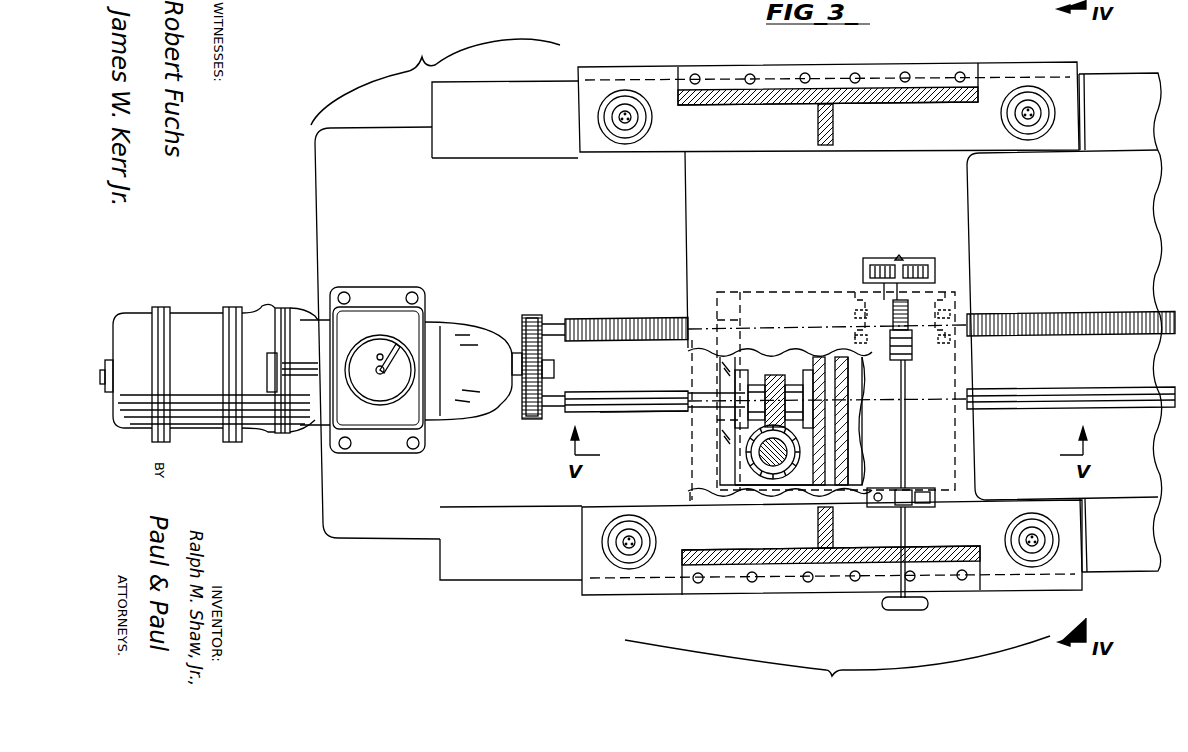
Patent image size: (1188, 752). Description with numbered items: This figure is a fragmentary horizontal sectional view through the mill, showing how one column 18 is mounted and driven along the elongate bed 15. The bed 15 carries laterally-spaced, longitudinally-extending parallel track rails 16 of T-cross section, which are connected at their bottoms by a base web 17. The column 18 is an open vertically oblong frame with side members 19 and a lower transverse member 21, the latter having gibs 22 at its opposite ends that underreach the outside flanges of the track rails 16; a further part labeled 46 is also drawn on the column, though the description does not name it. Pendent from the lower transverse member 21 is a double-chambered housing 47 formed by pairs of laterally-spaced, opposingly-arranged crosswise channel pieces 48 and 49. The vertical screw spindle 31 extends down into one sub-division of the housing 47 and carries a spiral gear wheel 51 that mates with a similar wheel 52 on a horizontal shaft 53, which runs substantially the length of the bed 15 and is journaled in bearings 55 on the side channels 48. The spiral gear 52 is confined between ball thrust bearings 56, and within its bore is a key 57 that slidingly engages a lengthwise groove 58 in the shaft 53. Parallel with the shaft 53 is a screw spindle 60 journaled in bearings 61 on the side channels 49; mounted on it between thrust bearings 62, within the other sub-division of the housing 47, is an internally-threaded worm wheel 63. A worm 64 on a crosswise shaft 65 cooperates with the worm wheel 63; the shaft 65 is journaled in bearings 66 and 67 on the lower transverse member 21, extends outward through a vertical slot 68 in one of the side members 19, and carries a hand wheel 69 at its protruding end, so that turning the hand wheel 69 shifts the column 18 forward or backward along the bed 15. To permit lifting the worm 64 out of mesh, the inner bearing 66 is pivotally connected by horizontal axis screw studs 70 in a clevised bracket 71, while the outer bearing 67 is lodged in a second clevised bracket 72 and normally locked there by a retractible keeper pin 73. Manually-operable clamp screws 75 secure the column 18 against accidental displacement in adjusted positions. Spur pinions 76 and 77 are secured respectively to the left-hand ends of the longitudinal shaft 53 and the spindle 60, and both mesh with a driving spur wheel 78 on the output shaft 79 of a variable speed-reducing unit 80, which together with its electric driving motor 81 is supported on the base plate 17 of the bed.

The bed 15 is at (435, 75).
The track rails 16 is at (1124, 78).
The base web 17 is at (317, 232).
The column 18 is at (837, 666).
The side members 19 is at (745, 100).
The lower transverse member 21 is at (690, 220).
The gibs 22 is at (1026, 63).
The vertical screw spindle 31 is at (759, 452).
The T-bar 46 is at (833, 125).
The double-chambered housing 47 is at (765, 488).
The channel pieces 48 is at (722, 430).
The channel pieces 49 is at (848, 428).
The spiral gear wheel 51 is at (750, 462).
The spiral gear wheel 52 is at (776, 375).
The horizontal shaft 53 is at (640, 411).
The bearings 55 is at (735, 382).
The ball thrust bearings 56 is at (756, 385).
The key 57 is at (717, 405).
The lengthwise groove 58 is at (645, 398).
The screw spindle 60 is at (660, 322).
The bearings 61 is at (860, 292).
The thrust bearings 62 is at (855, 312).
The worm wheel 63 is at (893, 330).
The worm 64 is at (912, 345).
The crosswise shaft 65 is at (905, 440).
The inner bearing 66 is at (899, 258).
The outer bearing 67 is at (906, 507).
The vertical slot 68 is at (901, 545).
The hand wheel 69 is at (903, 610).
The screw studs 70 is at (863, 265).
The clevised bracket 71 is at (896, 258).
The second clevised bracket 72 is at (870, 505).
The keeper pin 73 is at (932, 503).
The clamp screws 75 is at (652, 120).
The spur pinion 76 is at (531, 419).
The spur pinion 77 is at (531, 315).
The driving spur wheel 78 is at (516, 353).
The output shaft 79 is at (554, 368).
The variable speed-reducing unit 80 is at (420, 470).
The electric driving motor 81 is at (209, 373).